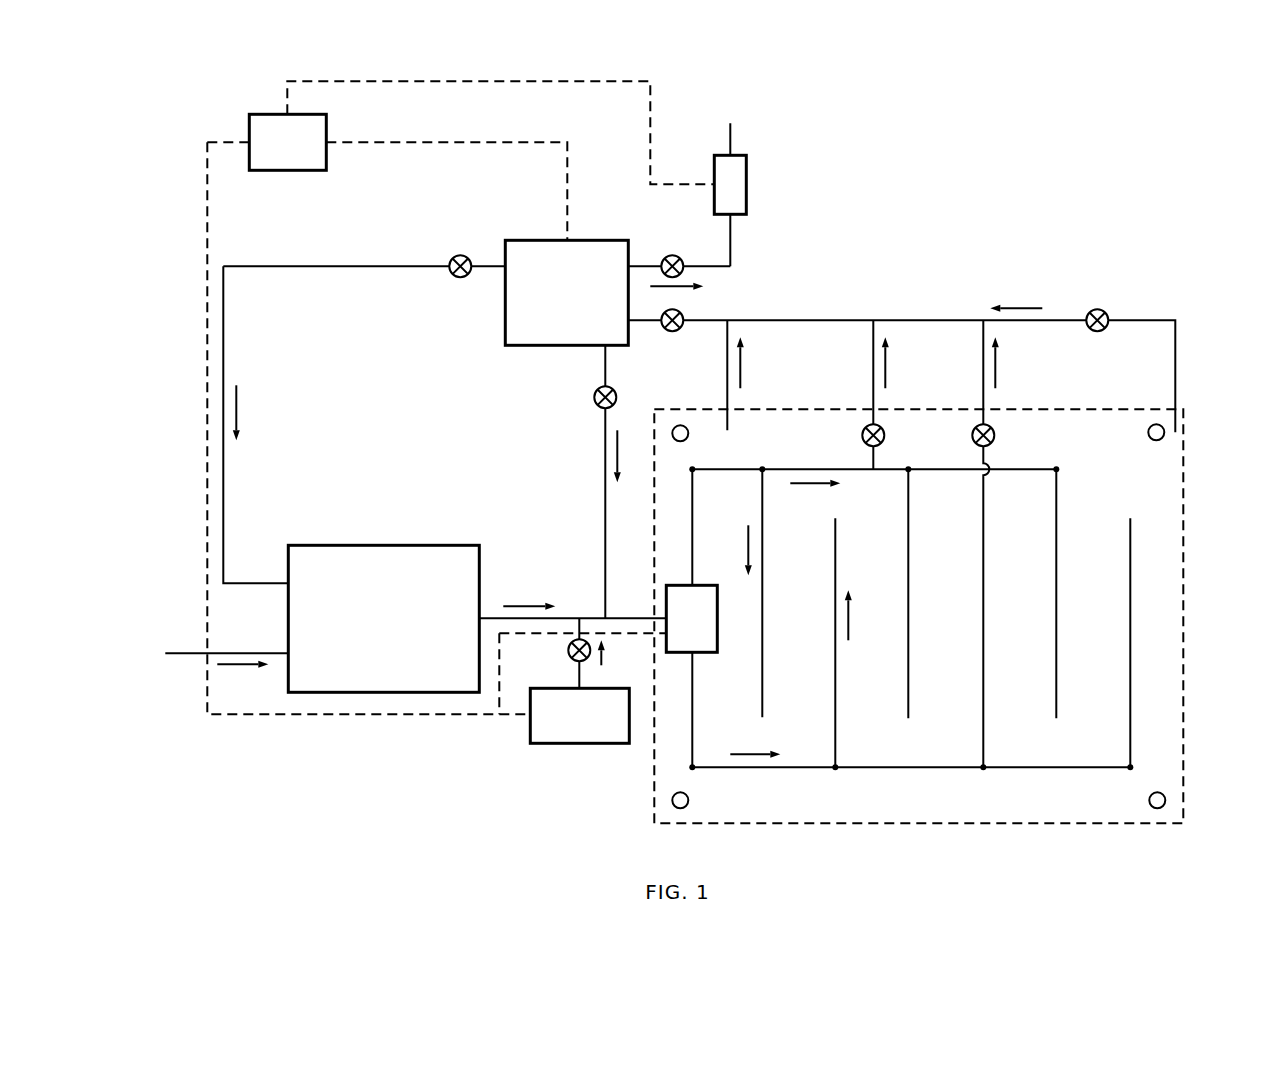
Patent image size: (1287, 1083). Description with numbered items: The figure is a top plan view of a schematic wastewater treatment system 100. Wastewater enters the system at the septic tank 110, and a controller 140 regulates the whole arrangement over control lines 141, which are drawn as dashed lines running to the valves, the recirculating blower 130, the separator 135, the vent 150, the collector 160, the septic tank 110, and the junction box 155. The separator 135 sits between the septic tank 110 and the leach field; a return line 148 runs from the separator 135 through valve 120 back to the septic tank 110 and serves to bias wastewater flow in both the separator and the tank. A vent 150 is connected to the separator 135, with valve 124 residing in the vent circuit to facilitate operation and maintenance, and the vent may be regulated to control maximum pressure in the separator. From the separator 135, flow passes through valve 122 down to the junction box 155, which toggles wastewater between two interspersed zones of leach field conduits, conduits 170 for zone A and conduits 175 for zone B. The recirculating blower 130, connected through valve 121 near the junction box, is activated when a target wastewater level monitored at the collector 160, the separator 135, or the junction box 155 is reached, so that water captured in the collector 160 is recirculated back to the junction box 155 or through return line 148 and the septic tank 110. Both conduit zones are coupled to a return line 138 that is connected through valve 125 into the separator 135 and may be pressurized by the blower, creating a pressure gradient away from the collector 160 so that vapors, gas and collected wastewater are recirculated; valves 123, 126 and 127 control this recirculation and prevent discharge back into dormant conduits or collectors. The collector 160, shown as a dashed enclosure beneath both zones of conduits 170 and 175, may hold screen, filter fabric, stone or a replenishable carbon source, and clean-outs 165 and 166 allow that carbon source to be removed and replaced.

The treatment system 100 is at (1098, 189).
The septic tank 110 is at (365, 630).
The valve 120 is at (461, 255).
The valve 121 is at (568, 652).
The valve 122 is at (594, 400).
The valve 123 is at (1100, 309).
The valve 124 is at (670, 255).
The valve 125 is at (672, 332).
The valve 126 is at (884, 436).
The valve 127 is at (994, 436).
The recirculating blower 130 is at (561, 727).
The separator 135 is at (548, 304).
The return line 138 is at (913, 320).
The controller 140 is at (269, 154).
The control lines 141 is at (418, 82).
The return line 148 is at (223, 331).
The vent 150 is at (746, 182).
The junction box 155 is at (674, 630).
The collector 160 is at (1184, 575).
The clean-outs 165 is at (1148, 434).
The clean-outs 166 is at (1129, 766).
The leach field conduits 170 is at (836, 541).
The leach field conduits 175 is at (763, 590).